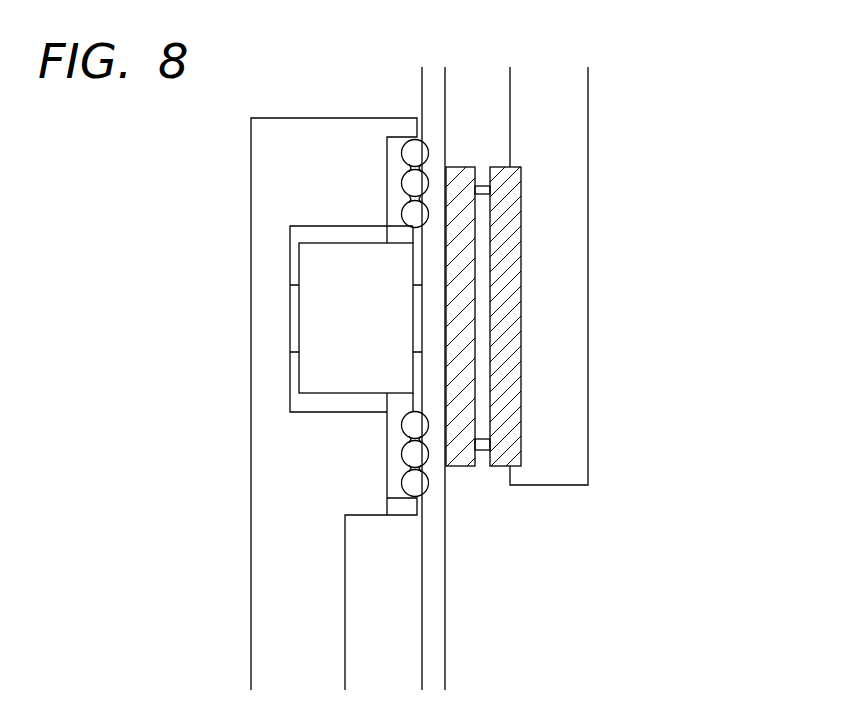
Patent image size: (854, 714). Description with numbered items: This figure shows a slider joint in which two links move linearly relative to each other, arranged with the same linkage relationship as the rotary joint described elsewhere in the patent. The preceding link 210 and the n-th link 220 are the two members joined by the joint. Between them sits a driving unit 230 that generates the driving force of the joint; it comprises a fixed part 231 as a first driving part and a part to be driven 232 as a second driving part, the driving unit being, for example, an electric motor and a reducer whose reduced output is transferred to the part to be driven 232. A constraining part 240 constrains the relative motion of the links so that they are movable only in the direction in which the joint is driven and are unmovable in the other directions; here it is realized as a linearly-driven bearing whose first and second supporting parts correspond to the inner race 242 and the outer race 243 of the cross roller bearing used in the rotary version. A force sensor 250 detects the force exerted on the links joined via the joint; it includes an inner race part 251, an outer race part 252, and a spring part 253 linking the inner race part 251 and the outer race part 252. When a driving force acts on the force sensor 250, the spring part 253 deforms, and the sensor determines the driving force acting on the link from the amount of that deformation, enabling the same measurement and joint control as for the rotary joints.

The n−1-th link 210 is at (267, 142).
The n-th link 220 is at (577, 105).
The driving unit 230 is at (352, 255).
The fixed part 231 is at (295, 332).
The part to be driven 232 is at (417, 302).
The constraining part 240 is at (398, 43).
The inner race 242 is at (393, 162).
The outer race 243 is at (430, 83).
The force sensor 250 is at (677, 205).
The inner race part 251 is at (465, 332).
The outer race part 252 is at (510, 273).
The spring part 253 is at (478, 195).